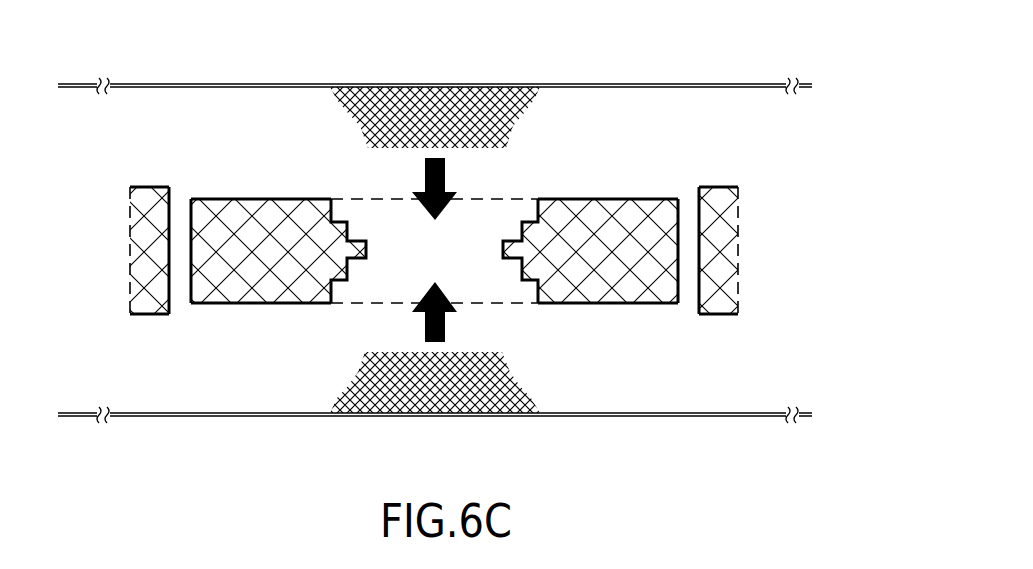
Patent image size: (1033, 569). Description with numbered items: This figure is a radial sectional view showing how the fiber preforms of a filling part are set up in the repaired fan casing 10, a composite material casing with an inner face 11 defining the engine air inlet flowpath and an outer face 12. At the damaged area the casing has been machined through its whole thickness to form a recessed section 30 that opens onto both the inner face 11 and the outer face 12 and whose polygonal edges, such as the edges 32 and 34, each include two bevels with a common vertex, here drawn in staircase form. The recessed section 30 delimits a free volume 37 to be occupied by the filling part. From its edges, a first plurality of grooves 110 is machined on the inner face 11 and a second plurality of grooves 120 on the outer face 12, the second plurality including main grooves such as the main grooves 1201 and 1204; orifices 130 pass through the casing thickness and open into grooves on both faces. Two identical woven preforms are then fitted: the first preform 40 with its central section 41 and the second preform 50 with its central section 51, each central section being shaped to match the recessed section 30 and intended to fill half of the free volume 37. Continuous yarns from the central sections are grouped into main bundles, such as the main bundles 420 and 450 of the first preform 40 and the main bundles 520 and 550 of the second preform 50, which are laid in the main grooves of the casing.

The fan casing 10 is at (435, 245).
The inner face 11 is at (140, 314).
The outer face 12 is at (141, 186).
The recessed section 30 is at (373, 307).
The edge 32 is at (332, 210).
The edge 34 is at (538, 210).
The free volume 37 is at (445, 257).
The first preform 40 is at (435, 77).
The central section 41 is at (473, 88).
The second preform 50 is at (435, 420).
The central section 51 is at (472, 412).
The first plurality of grooves 110 is at (286, 315).
The second plurality of grooves 120 is at (434, 245).
The orifices 130 is at (180, 213).
The main bundle 420 is at (178, 84).
The main bundle 450 is at (638, 84).
The main bundle 520 is at (178, 418).
The main bundle 550 is at (644, 418).
The main groove 1201 is at (240, 199).
The main groove 1204 is at (628, 199).